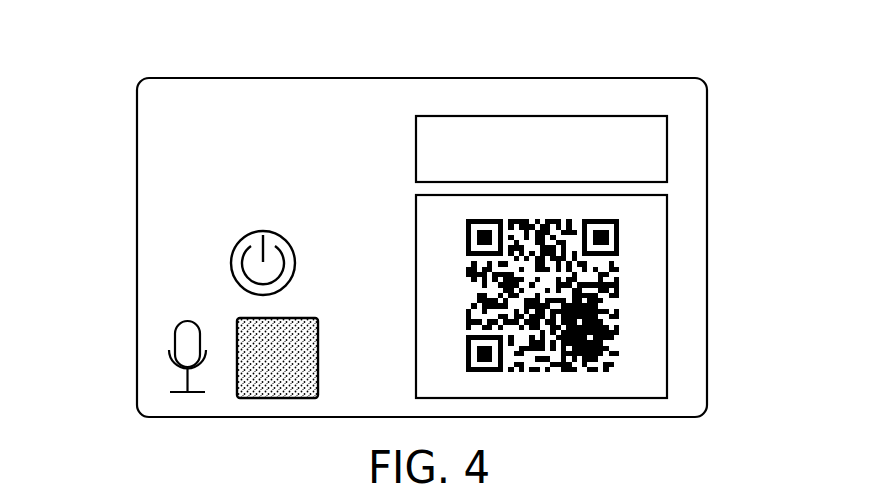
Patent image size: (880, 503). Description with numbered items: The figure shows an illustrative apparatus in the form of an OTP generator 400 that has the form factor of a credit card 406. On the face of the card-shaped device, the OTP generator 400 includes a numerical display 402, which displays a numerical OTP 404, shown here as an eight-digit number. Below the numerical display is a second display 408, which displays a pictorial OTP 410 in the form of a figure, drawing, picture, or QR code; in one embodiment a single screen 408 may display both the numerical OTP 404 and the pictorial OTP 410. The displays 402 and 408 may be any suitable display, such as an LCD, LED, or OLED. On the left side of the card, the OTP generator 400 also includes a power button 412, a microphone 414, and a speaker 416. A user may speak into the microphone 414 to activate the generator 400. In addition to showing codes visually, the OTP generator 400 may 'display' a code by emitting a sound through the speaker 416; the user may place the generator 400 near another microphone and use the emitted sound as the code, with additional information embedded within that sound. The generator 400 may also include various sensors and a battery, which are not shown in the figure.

The OTP generator 400 is at (142, 33).
The numerical display 402 is at (600, 116).
The numerical OTP 404 is at (647, 155).
The credit card 406 is at (552, 78).
The second display 408 is at (667, 250).
The pictorial OTP 410 is at (628, 338).
The power button 412 is at (230, 260).
The microphone 414 is at (180, 392).
The speaker 416 is at (273, 398).